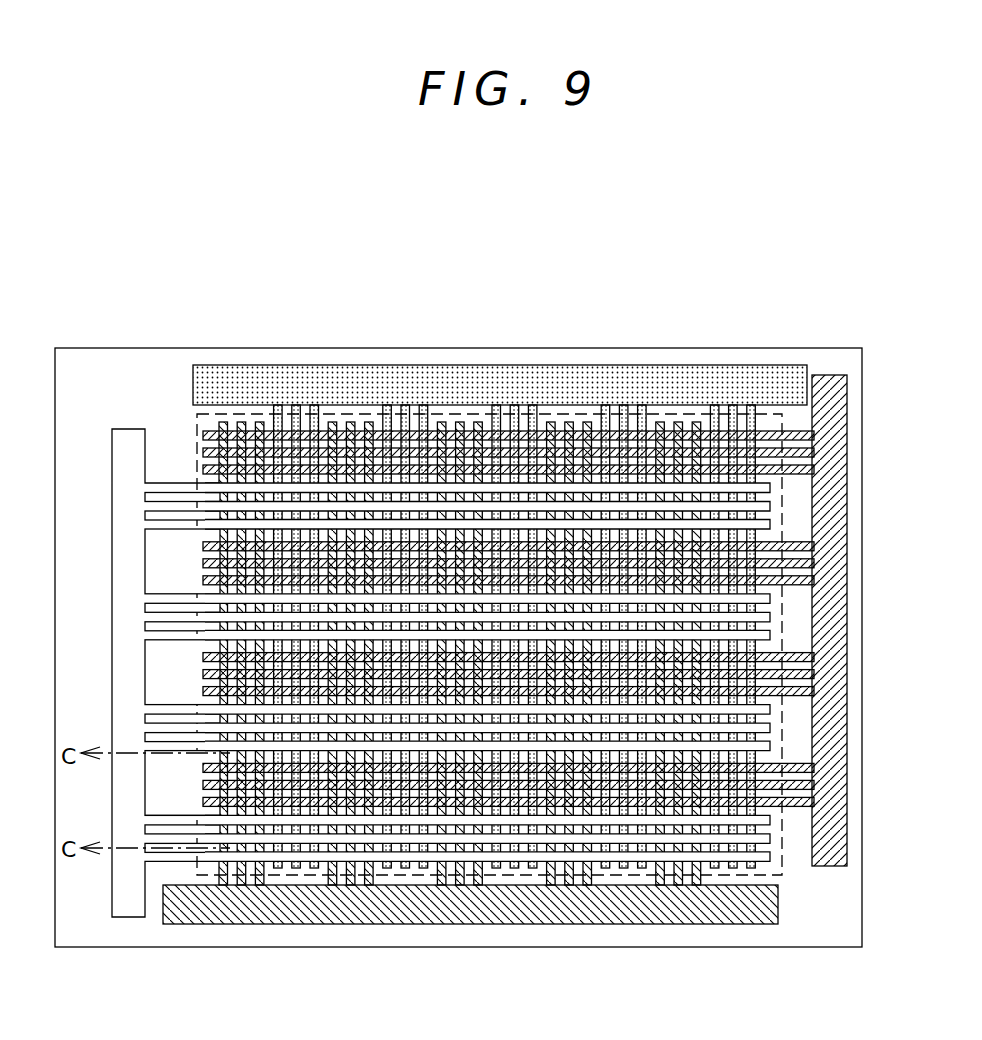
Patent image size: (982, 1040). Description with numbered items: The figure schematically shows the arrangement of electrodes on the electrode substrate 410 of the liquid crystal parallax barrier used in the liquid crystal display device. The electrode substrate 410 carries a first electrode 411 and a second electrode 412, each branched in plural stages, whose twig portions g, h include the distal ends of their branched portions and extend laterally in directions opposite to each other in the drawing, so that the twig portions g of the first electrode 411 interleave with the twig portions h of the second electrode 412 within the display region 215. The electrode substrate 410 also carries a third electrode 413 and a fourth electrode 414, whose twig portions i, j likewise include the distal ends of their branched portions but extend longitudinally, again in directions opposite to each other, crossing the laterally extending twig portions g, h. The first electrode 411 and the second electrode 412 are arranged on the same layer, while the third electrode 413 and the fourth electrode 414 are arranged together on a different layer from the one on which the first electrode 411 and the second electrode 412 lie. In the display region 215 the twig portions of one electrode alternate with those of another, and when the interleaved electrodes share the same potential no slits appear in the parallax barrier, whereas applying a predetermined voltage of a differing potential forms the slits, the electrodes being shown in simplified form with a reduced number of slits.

The electrode substrate 410 is at (472, 273).
The first electrode 411 is at (161, 638).
The second electrode 412 is at (465, 638).
The third electrode 413 is at (305, 373).
The fourth electrode 414 is at (426, 918).
The display region 215 is at (197, 440).
The twig portion g is at (200, 767).
The twig portion h is at (208, 826).
The twig portion i is at (218, 872).
The twig portion j is at (273, 868).